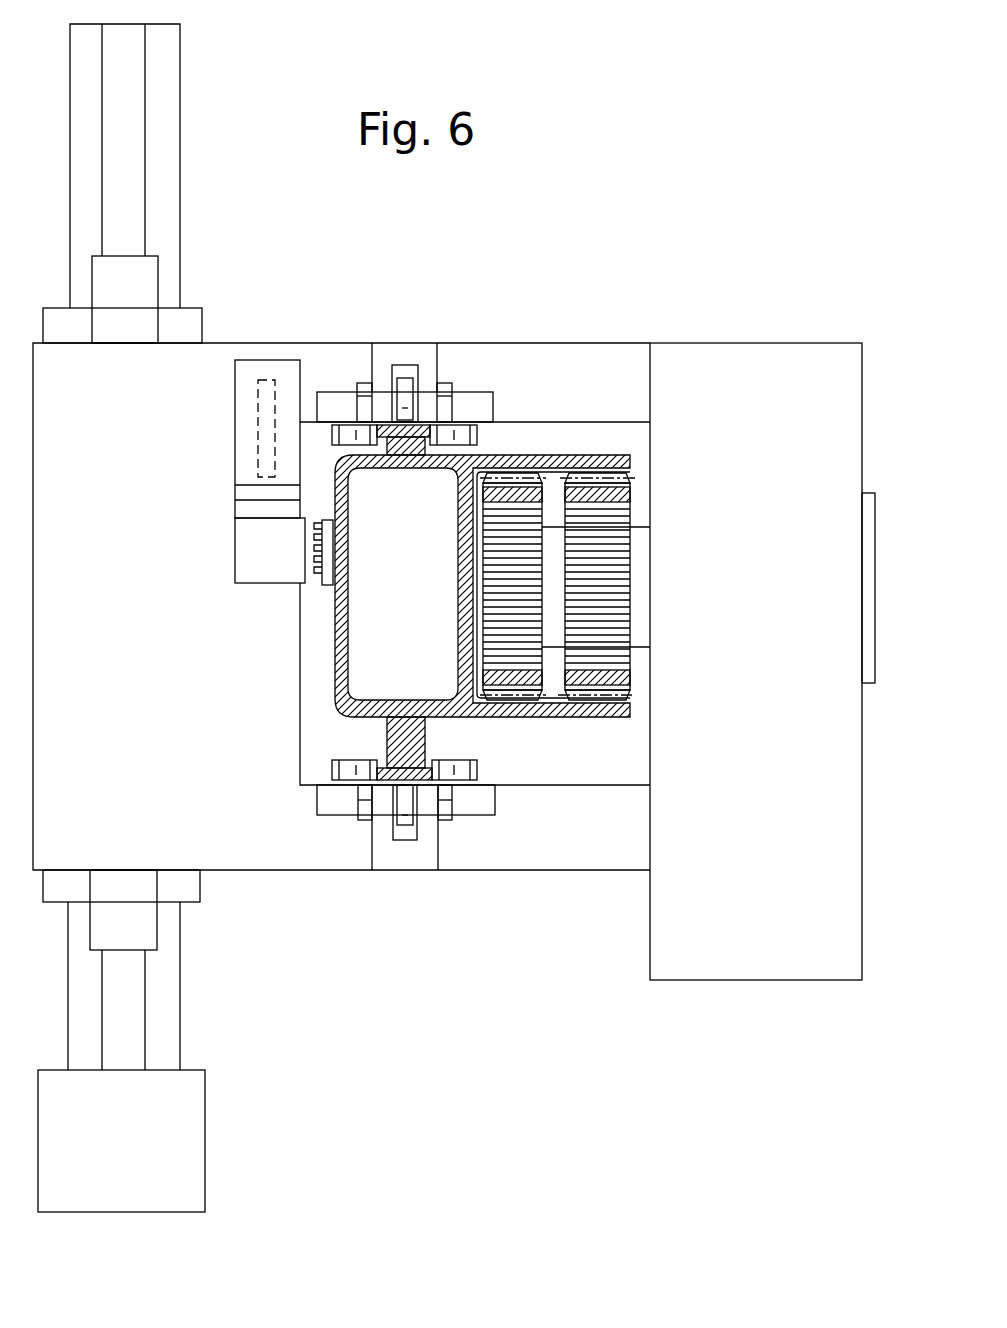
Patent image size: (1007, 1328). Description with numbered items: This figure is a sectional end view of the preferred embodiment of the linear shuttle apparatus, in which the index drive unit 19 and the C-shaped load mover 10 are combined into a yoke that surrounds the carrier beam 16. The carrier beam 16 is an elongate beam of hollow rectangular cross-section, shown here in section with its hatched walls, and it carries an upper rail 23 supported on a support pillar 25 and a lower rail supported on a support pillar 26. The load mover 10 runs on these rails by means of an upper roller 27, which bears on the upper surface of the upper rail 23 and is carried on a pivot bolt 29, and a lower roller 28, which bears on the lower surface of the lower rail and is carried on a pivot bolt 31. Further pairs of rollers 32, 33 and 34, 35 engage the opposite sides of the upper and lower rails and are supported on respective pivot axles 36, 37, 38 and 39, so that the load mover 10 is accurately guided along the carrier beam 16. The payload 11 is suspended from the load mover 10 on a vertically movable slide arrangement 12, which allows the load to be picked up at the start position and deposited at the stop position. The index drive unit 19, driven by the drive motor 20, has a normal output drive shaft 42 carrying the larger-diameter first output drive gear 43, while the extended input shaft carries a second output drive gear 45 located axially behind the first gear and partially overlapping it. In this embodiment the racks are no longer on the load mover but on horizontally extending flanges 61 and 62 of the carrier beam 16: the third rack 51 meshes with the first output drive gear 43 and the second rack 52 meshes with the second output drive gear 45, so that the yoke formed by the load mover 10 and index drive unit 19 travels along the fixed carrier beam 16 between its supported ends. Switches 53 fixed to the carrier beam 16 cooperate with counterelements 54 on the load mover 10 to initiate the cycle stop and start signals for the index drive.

The load mover 10 is at (263, 847).
The payload 11 is at (210, 1152).
The vertically movable slide arrangement 12 is at (167, 985).
The carrier beam 16 is at (342, 617).
The index drive unit 19 is at (755, 960).
The drive motor 20 is at (870, 676).
The upper rail 23 is at (405, 455).
The support pillar 25 is at (407, 463).
The support pillar 26 is at (387, 717).
The upper roller 27 is at (405, 383).
The lower roller 28 is at (403, 840).
The pivot bolt 29 is at (447, 390).
The pivot bolt 31 is at (452, 823).
The roller 32 is at (340, 430).
The roller 33 is at (478, 437).
The roller 34 is at (332, 772).
The roller 35 is at (478, 772).
The pivot axle 36 is at (350, 424).
The pivot axle 37 is at (465, 427).
The pivot axle 38 is at (352, 788).
The pivot axle 39 is at (462, 788).
The output drive shaft 42 is at (638, 547).
The first output drive gear 43 is at (615, 658).
The second output drive gear 45 is at (537, 604).
The third rack 51 is at (623, 697).
The second rack 52 is at (548, 457).
The microswitch or proximity switch 53 is at (324, 586).
The counterelement 54 is at (303, 556).
The horizontally extending flange 61 is at (565, 718).
The horizontally extending flange 62 is at (595, 457).